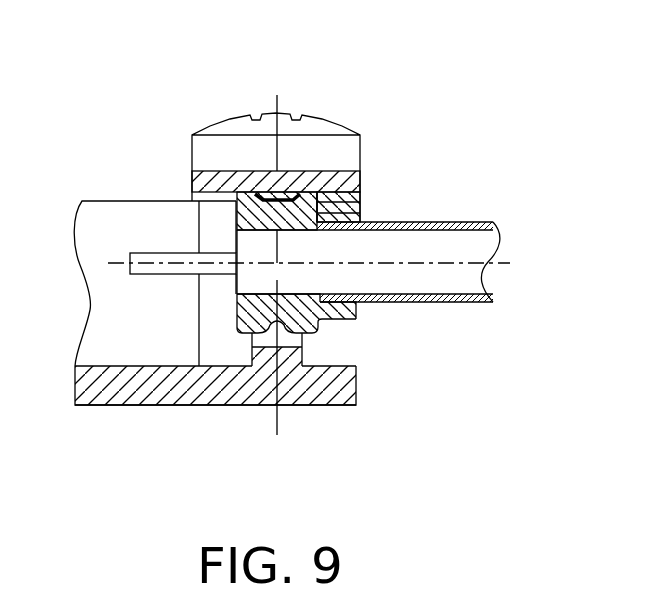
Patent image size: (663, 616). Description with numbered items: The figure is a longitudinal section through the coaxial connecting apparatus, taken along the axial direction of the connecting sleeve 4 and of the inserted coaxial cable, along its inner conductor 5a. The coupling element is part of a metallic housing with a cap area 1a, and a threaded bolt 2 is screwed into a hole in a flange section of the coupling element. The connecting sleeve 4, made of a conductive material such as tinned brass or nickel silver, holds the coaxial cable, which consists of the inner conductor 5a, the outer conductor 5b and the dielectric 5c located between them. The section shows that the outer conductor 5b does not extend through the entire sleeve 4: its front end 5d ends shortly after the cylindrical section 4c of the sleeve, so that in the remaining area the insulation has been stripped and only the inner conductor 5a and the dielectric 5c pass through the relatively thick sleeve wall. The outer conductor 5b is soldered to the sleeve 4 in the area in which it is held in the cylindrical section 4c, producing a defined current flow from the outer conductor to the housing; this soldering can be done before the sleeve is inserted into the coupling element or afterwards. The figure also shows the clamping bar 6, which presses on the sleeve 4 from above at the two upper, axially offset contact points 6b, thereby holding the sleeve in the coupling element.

The cap area 1a is at (323, 392).
The threaded bolt 2 is at (315, 115).
The connecting sleeve 4 is at (238, 317).
The cylindrical section 4c is at (357, 222).
The inner conductor 5a is at (150, 253).
The outer conductor 5b is at (425, 220).
The dielectric 5c is at (443, 275).
The front end of the outer conductor 5d is at (353, 319).
The clamping bar 6 is at (202, 173).
The contact points 6b is at (243, 192).